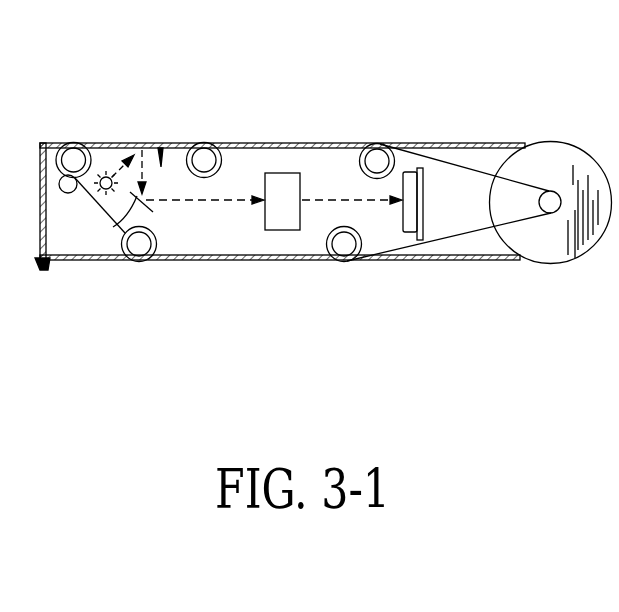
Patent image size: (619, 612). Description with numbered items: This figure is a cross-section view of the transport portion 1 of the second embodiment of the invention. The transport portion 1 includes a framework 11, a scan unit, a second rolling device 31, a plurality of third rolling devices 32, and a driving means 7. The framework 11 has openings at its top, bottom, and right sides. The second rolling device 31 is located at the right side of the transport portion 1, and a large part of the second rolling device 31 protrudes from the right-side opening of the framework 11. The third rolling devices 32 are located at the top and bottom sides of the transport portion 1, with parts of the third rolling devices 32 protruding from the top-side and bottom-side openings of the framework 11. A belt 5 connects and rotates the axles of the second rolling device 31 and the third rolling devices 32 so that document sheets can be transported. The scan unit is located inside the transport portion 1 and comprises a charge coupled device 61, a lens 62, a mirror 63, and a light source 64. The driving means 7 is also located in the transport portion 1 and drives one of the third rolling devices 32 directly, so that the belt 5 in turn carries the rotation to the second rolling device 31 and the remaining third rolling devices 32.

The transport portion 1 is at (157, 143).
The belt 5 is at (467, 166).
The driving means 7 is at (64, 192).
The framework 11 is at (258, 143).
The second rolling device 31 is at (544, 262).
The third rolling devices 32 is at (377, 145).
The charge coupled device (CCD) 61 is at (422, 240).
The lens 62 is at (278, 222).
The mirror 63 is at (125, 260).
The light source 64 is at (103, 172).